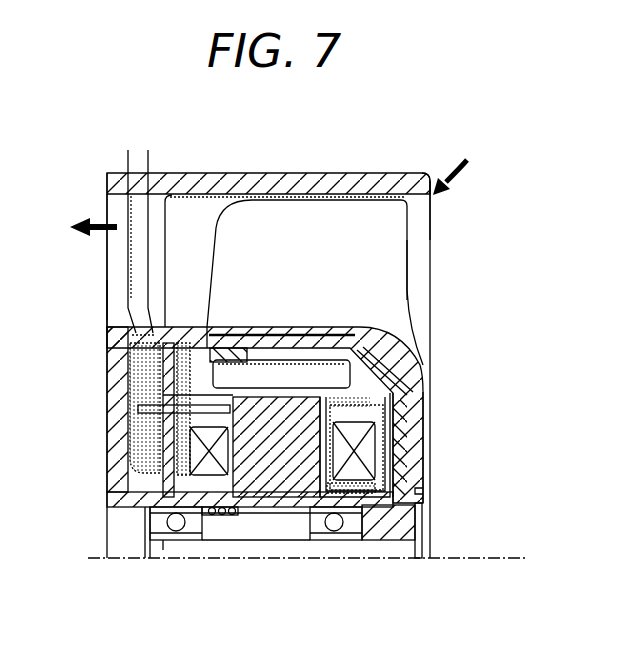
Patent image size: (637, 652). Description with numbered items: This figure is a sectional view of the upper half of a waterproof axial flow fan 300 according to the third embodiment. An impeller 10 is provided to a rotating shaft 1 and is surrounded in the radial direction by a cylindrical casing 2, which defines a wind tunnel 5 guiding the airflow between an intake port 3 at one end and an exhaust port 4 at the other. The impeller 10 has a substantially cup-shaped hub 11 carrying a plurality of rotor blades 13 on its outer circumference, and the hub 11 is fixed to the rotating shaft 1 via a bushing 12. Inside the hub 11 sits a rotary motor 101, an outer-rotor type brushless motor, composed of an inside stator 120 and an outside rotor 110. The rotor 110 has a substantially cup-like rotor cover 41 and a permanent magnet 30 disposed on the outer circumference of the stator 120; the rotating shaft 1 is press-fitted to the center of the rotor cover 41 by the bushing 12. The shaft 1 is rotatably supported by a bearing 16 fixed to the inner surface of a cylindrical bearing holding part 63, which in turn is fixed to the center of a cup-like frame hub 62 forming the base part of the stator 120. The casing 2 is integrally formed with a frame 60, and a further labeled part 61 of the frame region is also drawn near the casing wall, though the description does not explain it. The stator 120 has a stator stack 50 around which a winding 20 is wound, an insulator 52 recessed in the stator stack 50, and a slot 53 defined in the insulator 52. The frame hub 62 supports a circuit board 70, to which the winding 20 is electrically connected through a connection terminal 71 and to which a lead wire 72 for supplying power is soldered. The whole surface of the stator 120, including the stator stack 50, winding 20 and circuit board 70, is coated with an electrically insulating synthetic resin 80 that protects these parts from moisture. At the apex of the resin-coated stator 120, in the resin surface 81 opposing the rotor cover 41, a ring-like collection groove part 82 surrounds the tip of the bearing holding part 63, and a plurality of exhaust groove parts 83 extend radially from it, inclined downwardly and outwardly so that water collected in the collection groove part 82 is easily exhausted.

The waterproof axial flow fan 300 is at (362, 97).
The rotating shaft 1 is at (403, 548).
The casing 2 is at (150, 172).
The intake port 3 is at (432, 222).
The exhaust port 4 is at (107, 215).
The wind tunnel 5 is at (292, 194).
The impeller 10 is at (407, 333).
The hub 11 is at (413, 447).
The bushing 12 is at (407, 524).
The rotor blades 13 is at (320, 210).
The bearing 16 is at (327, 531).
The winding 20 is at (355, 482).
The permanent magnet 30 is at (335, 328).
The rotor cover 41 is at (383, 310).
The stator stack 50 is at (297, 413).
The insulator 52 is at (398, 337).
The slot 53 is at (388, 398).
The frame 60 is at (100, 293).
The wall upper portion 61 is at (107, 267).
The frame hub 62 is at (138, 432).
The bearing holding part 63 is at (146, 503).
The circuit board 70 is at (107, 494).
The connection terminal 71 is at (165, 408).
The lead wire 72 is at (128, 190).
The electrically insulating synthetic resin 80 is at (198, 387).
The resin surface 81 is at (417, 460).
The ring-like collection groove part 82 is at (422, 487).
The exhaust groove parts 83 is at (400, 440).
The rotary motor 101 is at (140, 348).
The outside rotor 110 is at (410, 383).
The inside stator 120 is at (260, 395).